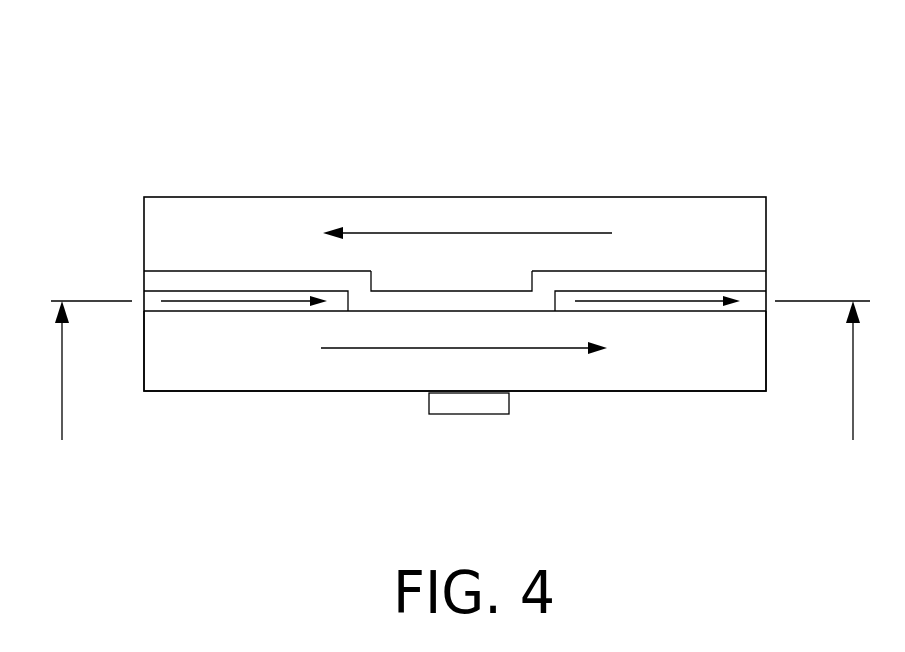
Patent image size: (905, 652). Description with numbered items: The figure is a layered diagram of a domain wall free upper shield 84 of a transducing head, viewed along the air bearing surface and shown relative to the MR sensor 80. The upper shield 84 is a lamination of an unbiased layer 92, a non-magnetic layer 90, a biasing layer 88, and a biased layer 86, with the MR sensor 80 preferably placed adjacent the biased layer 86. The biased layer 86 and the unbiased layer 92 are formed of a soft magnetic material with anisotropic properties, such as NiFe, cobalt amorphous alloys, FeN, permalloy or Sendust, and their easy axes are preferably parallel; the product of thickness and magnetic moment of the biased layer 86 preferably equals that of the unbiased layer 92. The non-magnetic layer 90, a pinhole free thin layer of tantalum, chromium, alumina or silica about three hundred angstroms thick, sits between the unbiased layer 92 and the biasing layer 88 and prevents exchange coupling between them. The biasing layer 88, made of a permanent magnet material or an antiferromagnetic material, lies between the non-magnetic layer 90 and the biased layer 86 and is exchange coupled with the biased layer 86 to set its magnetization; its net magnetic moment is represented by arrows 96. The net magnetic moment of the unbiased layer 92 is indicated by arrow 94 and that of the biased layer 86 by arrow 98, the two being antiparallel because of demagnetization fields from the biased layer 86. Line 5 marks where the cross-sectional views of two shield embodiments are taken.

The upper shield 84 is at (150, 145).
The unbiased layer 92 is at (733, 233).
The non-magnetic layer 90 is at (735, 285).
The biased layer 86 is at (631, 367).
The biasing layer 88 is at (200, 304).
The arrows 96 is at (260, 298).
The arrow 94 is at (472, 233).
The arrow 98 is at (420, 348).
The MR sensor 80 is at (467, 414).
The line 5- 5 is at (460, 388).